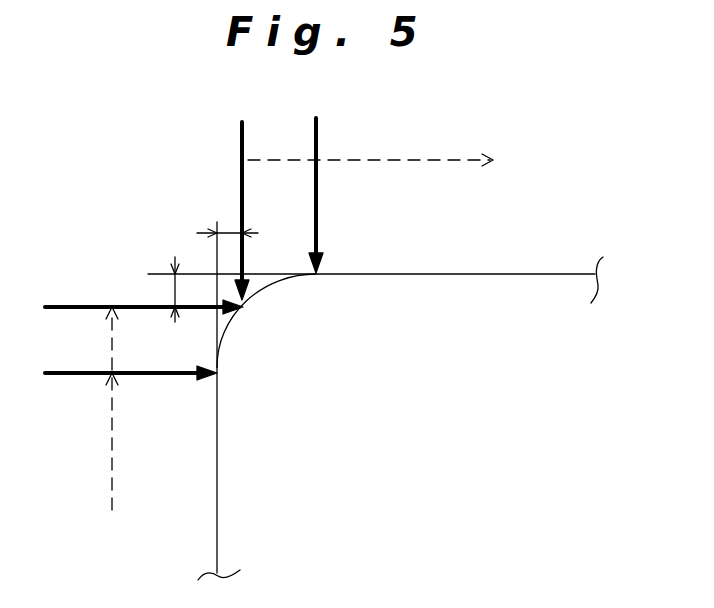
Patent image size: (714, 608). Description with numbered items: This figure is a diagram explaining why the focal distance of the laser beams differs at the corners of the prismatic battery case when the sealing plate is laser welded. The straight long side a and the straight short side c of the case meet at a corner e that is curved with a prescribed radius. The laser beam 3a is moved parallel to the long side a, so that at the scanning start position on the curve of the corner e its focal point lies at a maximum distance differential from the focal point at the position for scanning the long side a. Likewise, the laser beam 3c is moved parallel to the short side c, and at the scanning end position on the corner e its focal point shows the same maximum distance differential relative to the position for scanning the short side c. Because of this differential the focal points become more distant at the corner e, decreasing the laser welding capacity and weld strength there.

The laser beam 3a is at (316, 193).
The laser beam 3c is at (89, 310).
The longer side a is at (518, 275).
The shorter side c is at (217, 518).
The corner e is at (260, 300).